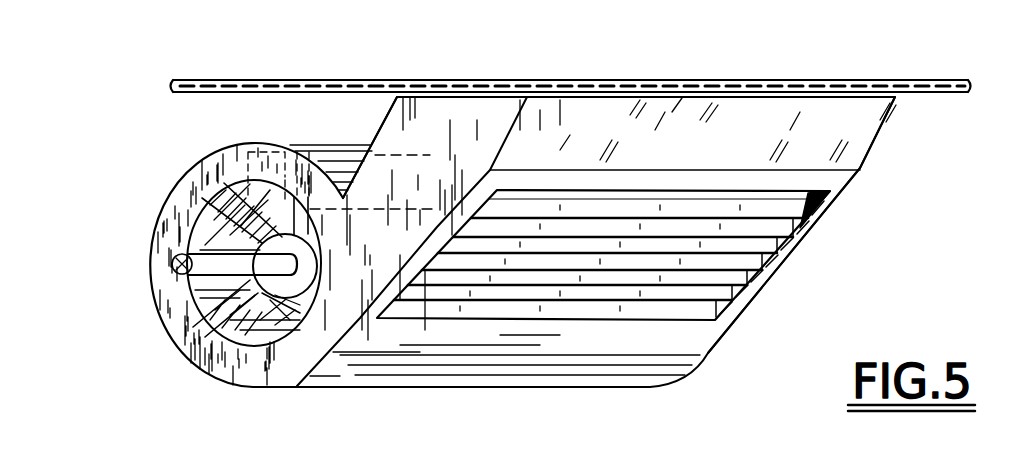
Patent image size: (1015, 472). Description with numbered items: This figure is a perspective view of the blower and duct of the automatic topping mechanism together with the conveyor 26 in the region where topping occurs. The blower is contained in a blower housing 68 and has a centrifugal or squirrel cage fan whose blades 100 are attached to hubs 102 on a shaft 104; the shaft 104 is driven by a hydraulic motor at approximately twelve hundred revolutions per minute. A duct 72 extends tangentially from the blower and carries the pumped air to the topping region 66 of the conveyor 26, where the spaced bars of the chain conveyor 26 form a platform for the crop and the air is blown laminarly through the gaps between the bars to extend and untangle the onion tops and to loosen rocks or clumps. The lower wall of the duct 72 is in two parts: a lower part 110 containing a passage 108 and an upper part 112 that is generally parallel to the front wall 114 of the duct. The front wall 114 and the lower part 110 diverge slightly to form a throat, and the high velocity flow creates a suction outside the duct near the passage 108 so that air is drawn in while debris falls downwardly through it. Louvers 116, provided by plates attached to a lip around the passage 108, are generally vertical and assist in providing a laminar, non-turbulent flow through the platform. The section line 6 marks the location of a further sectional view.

The elevating conveyor 26 is at (277, 82).
The topping region 66 is at (516, 70).
The blower housing 68 is at (167, 306).
The duct 72 is at (634, 309).
The blades 100 is at (259, 153).
The hubs 102 is at (193, 307).
The shaft 104 is at (176, 261).
The passage 108 is at (560, 297).
The lower part of the lower wall 110 is at (750, 305).
The upper part of the lower wall 112 is at (876, 140).
The front wall 114 is at (385, 120).
The louvers 116 is at (618, 292).
The section line 6- 6 is at (603, 146).